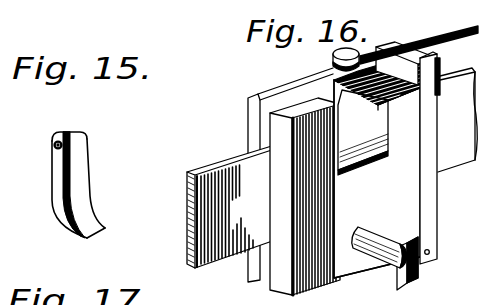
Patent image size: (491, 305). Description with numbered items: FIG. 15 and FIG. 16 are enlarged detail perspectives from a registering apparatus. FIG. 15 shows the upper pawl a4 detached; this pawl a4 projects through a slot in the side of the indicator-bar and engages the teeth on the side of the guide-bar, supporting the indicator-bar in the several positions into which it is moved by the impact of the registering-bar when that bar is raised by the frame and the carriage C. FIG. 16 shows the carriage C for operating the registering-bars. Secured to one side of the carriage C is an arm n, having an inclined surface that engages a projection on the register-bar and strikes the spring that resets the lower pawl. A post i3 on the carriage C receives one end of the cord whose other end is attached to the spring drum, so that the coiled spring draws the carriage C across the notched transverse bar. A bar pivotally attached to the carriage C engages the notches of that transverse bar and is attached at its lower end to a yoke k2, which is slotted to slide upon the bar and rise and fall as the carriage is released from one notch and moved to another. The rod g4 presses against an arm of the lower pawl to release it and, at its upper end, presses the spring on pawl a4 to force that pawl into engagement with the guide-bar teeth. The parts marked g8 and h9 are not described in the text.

In FIG. 15, the pawl a4 is at (82, 177).
In FIG. 16, the slide plate g8 is at (234, 206).
In FIG. 16, the carriage C is at (345, 178).
In FIG. 16, the arm n is at (342, 93).
In FIG. 16, the post i3 is at (353, 57).
In FIG. 16, the rod h9 is at (419, 39).
In FIG. 16, the yoke k2 is at (427, 217).
In FIG. 16, the rod g4 is at (377, 245).